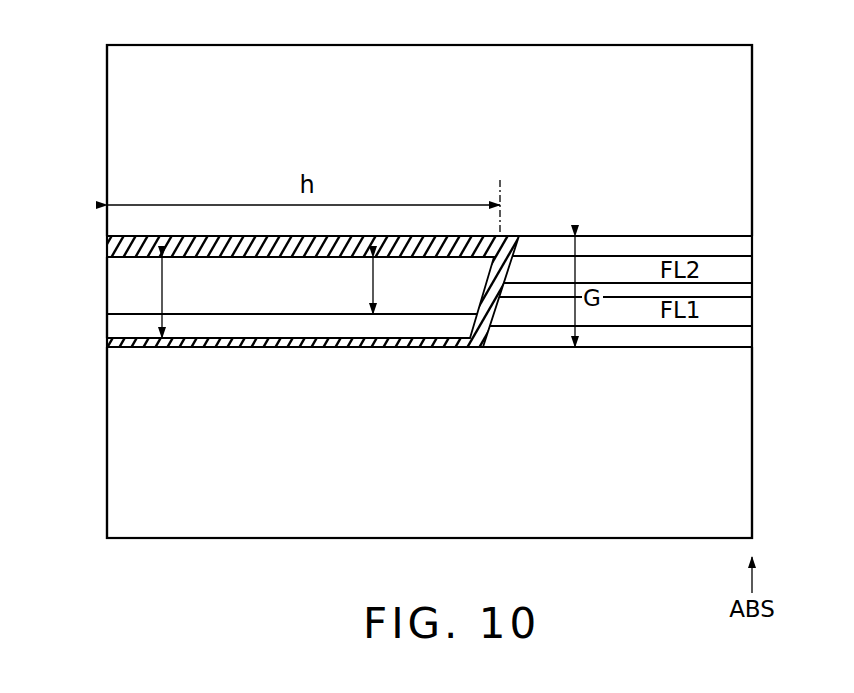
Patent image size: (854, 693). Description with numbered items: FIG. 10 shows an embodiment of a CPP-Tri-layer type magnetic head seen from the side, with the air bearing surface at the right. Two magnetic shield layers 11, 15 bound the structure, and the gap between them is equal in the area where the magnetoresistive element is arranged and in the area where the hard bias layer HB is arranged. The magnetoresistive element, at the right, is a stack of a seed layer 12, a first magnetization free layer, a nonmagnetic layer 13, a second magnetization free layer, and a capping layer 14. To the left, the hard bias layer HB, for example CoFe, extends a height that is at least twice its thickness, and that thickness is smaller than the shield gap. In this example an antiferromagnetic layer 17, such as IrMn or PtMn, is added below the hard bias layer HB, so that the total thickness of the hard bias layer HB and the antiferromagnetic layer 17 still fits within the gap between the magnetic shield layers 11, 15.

The magnetic shield layer 11 is at (740, 449).
The seed layer 12 is at (740, 339).
The nonmagnetic layer 13 is at (740, 293).
The capping layer 14 is at (740, 249).
The magnetic shield layer 15 is at (740, 171).
The antiferromagnetic layer 17 is at (117, 325).
The hard bias layer HB is at (117, 289).